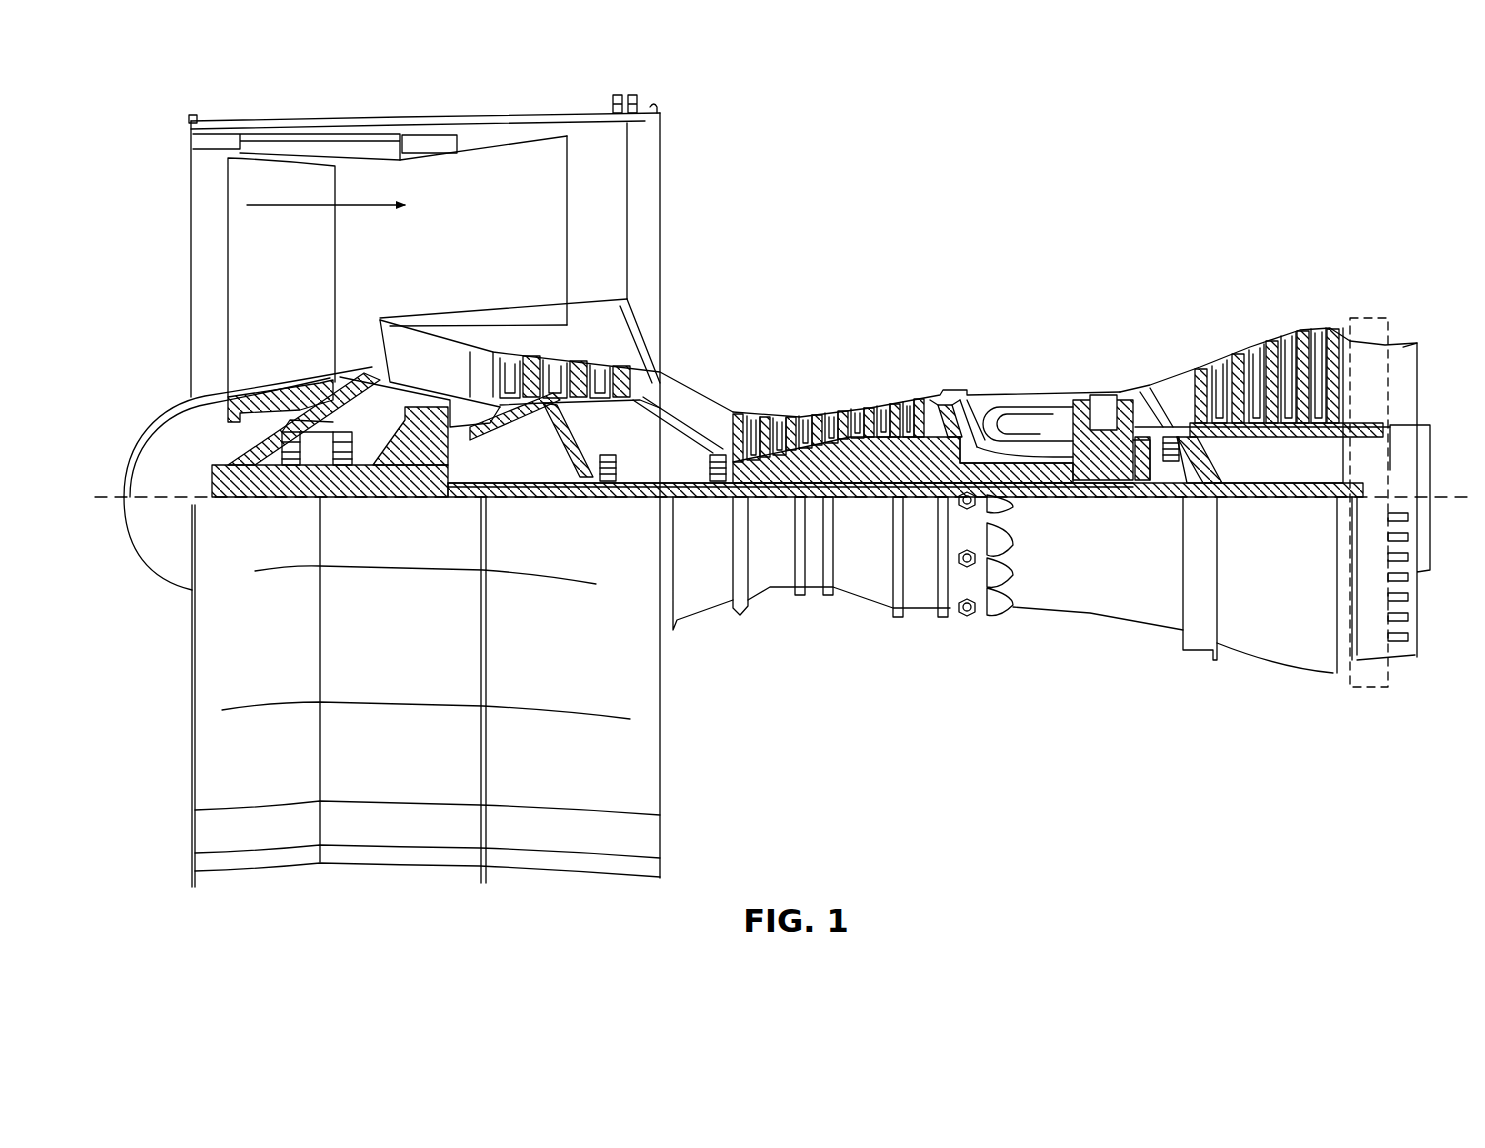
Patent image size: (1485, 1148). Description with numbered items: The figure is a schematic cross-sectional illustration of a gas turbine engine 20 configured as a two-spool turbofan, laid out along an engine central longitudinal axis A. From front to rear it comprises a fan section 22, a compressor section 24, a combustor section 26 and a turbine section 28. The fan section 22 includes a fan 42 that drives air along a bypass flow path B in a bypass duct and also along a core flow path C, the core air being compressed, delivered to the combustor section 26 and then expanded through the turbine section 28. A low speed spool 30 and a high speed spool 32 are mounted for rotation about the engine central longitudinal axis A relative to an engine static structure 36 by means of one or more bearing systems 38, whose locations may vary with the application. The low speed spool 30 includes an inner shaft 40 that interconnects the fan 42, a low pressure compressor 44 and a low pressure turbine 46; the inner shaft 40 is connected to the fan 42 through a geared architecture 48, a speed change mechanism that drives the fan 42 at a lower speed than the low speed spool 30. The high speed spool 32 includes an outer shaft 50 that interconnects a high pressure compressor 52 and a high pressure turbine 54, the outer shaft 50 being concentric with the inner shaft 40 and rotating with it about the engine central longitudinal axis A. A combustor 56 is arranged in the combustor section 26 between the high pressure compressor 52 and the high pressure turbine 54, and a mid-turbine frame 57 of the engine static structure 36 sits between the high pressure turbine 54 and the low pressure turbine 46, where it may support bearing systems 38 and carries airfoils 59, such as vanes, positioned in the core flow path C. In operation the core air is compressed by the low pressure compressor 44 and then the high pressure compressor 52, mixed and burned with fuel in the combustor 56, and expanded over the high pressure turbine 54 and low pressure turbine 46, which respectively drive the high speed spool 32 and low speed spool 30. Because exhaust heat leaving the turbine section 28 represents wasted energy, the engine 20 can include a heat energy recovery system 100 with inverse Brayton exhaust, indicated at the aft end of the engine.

The gas turbine engine 20 is at (1238, 168).
The fan section 22 is at (316, 108).
The compressor section 24 is at (738, 396).
The combustor section 26 is at (1020, 352).
The turbine section 28 is at (1143, 300).
The low speed spool 30 is at (884, 503).
The high speed spool 32 is at (945, 428).
The engine static structure 36 is at (924, 619).
The bearing systems 38 is at (609, 480).
The inner shaft 40 is at (677, 492).
The fan 42 is at (274, 252).
The low pressure compressor 44 is at (580, 372).
The low pressure turbine 46 is at (1270, 358).
The geared architecture 48 is at (425, 465).
The outer shaft 50 is at (1055, 485).
The high pressure compressor 52 is at (840, 418).
The high pressure turbine 54 is at (1105, 393).
The combustor 56 is at (1030, 415).
The mid-turbine frame 57 is at (1158, 378).
The airfoils 59 is at (1170, 415).
The heat energy recovery system 100 is at (1375, 690).
The engine central longitudinal axis A is at (1440, 495).
The bypass flow path B is at (287, 205).
The core flow path C is at (376, 360).